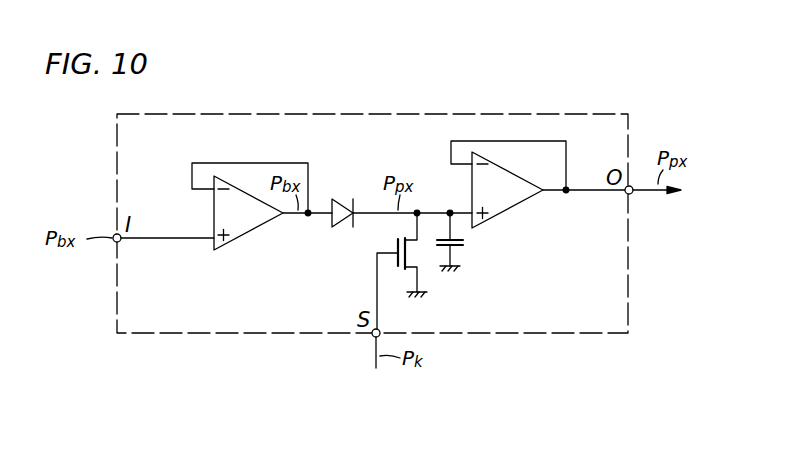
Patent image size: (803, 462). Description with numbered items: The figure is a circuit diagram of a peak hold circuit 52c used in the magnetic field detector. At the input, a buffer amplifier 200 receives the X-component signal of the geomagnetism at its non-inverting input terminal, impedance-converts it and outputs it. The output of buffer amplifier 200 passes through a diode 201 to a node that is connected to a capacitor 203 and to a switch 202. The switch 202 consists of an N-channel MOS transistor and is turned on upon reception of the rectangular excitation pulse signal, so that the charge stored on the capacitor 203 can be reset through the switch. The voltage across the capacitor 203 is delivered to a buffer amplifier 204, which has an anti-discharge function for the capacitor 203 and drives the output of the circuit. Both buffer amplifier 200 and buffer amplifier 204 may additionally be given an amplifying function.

The peak hold circuit 52c is at (400, 114).
The buffer amplifier 200 is at (262, 223).
The diode 201 is at (338, 227).
The switch 202 is at (418, 262).
The capacitor 203 is at (468, 243).
The buffer amplifier 204 is at (522, 203).